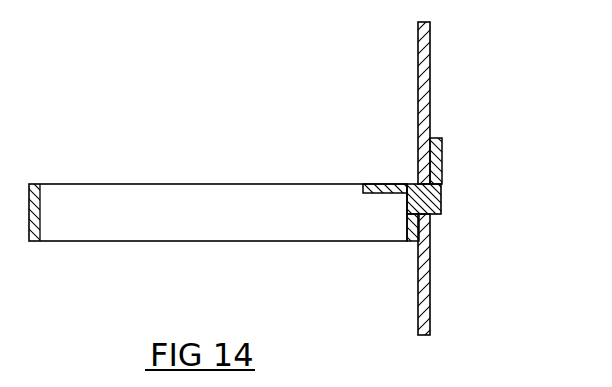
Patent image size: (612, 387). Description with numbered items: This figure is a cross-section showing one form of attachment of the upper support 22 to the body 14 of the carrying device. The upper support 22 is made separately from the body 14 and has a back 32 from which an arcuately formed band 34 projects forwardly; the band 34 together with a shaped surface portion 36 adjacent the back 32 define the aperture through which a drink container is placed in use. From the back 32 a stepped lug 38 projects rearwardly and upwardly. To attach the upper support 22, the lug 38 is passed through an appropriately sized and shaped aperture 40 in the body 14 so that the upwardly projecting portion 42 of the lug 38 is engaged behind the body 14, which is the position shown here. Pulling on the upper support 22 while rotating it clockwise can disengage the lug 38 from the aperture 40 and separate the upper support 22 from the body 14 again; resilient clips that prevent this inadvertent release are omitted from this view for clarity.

The body 14 is at (430, 62).
The upper support 22 is at (306, 193).
The back 32 is at (407, 220).
The arcuately formed band 34 is at (178, 208).
The shaped surface portion 36 is at (372, 185).
The stepped lug 38 is at (451, 200).
The aperture 40 is at (412, 163).
The upwardly projecting portion 42 is at (442, 155).